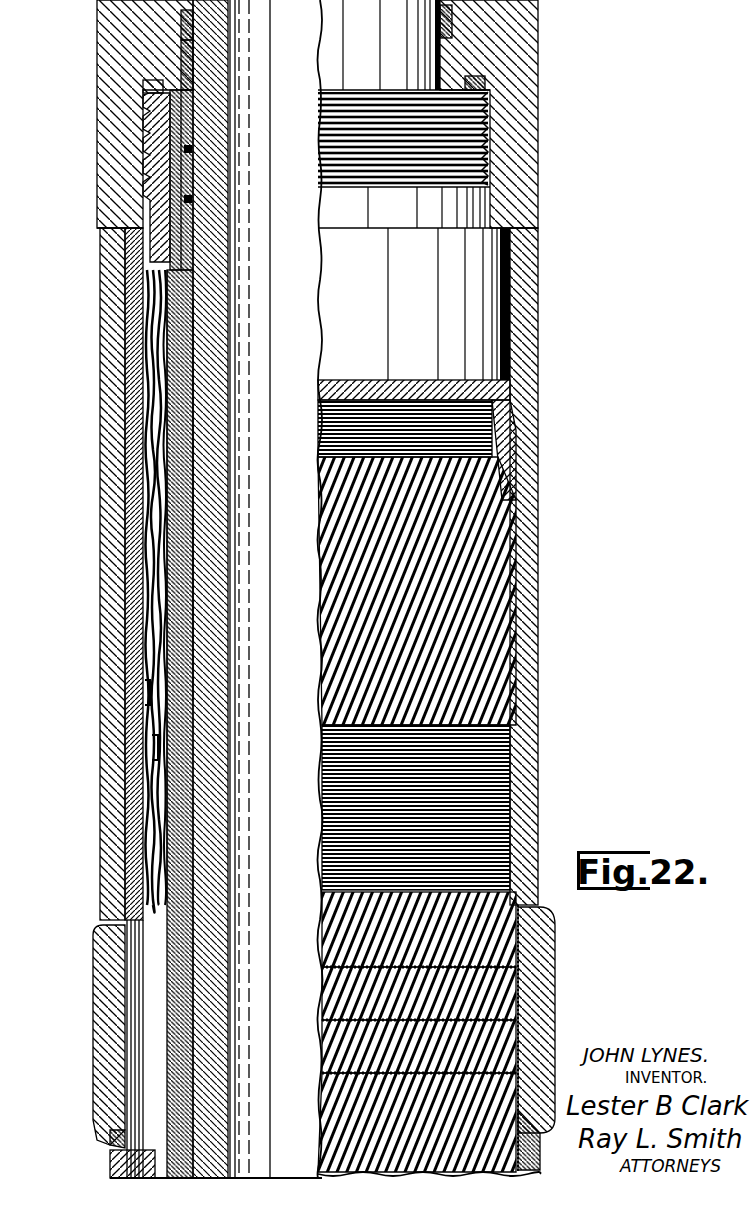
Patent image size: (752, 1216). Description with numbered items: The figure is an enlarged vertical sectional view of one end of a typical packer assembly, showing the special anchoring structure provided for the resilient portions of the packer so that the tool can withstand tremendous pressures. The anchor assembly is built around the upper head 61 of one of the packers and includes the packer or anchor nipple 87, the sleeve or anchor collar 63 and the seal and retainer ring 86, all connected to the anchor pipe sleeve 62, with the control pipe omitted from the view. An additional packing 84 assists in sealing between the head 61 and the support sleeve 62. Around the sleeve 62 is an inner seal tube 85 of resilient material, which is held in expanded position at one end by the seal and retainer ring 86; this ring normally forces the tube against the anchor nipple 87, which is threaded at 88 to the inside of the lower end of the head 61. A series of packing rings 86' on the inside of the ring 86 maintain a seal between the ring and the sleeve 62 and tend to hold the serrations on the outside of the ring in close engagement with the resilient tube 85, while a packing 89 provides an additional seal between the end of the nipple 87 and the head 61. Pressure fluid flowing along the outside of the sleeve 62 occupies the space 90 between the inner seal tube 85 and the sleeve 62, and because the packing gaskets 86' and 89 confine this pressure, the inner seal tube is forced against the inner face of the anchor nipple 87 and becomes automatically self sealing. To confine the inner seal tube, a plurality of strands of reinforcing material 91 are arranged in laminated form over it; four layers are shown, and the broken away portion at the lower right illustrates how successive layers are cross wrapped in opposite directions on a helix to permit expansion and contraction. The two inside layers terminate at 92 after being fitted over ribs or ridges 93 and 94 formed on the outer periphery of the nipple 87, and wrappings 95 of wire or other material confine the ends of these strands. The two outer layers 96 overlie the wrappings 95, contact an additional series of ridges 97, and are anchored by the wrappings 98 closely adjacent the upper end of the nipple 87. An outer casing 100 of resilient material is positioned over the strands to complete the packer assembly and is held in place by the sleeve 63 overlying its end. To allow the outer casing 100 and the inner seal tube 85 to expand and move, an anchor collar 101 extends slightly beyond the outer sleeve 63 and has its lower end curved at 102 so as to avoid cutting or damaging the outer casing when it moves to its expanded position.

The upper head 61 is at (98, 42).
The anchor pipe sleeve 62 is at (207, 62).
The anchor collar sleeve 63 is at (105, 432).
The packing 84 is at (183, 30).
The inner seal tube 85 is at (190, 335).
The seal and retainer ring 86 is at (235, 180).
The packing rings 86' is at (245, 153).
The anchor nipple 87 is at (155, 202).
The threads 88 is at (145, 145).
The packing 89 is at (150, 84).
The space 90 is at (197, 525).
The reinforcing strands 91 is at (133, 970).
The termination of inside wire layers 92 is at (155, 498).
The rib 93 is at (162, 740).
The rib 94 is at (150, 692).
The wrappings 95 is at (158, 597).
The outer wire layers 96 is at (150, 545).
The ridges 97 is at (160, 368).
The wrappings 98 is at (138, 300).
The outer casing 100 is at (510, 428).
The anchor collar 101 is at (105, 1030).
The curved lower end 102 is at (115, 1128).